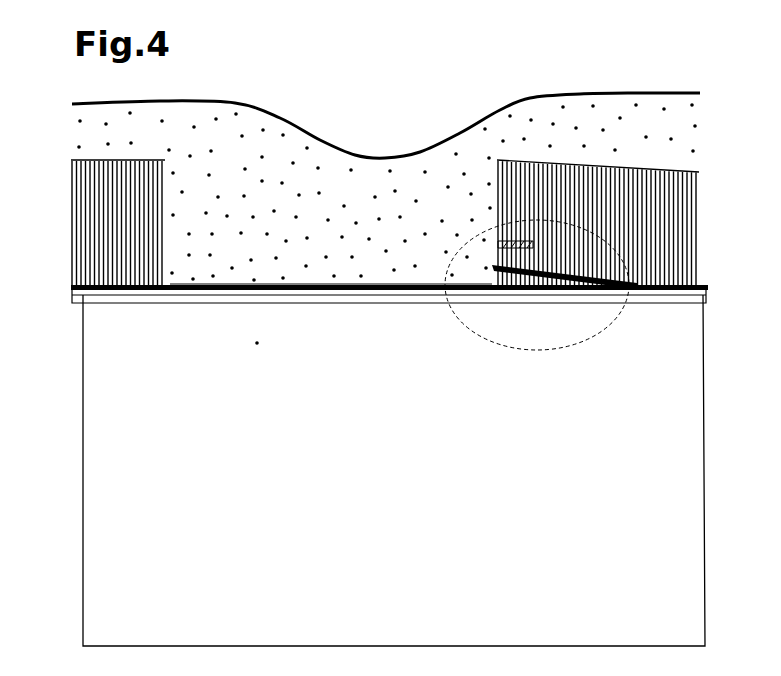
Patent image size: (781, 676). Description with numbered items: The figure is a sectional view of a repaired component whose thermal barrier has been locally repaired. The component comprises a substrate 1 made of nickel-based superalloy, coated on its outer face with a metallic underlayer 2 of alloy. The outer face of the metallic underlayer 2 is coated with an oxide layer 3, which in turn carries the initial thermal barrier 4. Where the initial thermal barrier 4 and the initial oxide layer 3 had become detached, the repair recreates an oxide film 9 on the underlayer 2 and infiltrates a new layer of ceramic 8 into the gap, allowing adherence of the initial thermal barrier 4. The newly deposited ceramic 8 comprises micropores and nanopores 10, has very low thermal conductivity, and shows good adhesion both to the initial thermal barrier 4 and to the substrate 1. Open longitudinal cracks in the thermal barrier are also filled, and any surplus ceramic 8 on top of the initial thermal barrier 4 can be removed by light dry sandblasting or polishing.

The substrate 1 is at (394, 470).
The metallic underlayer 2 is at (89, 297).
The oxide layer 3 is at (706, 288).
The thermal barrier 4 is at (91, 228).
The new layer of ceramic 8 is at (661, 130).
The oxide film 9 is at (298, 284).
The micropores and nanopores 10 is at (447, 161).